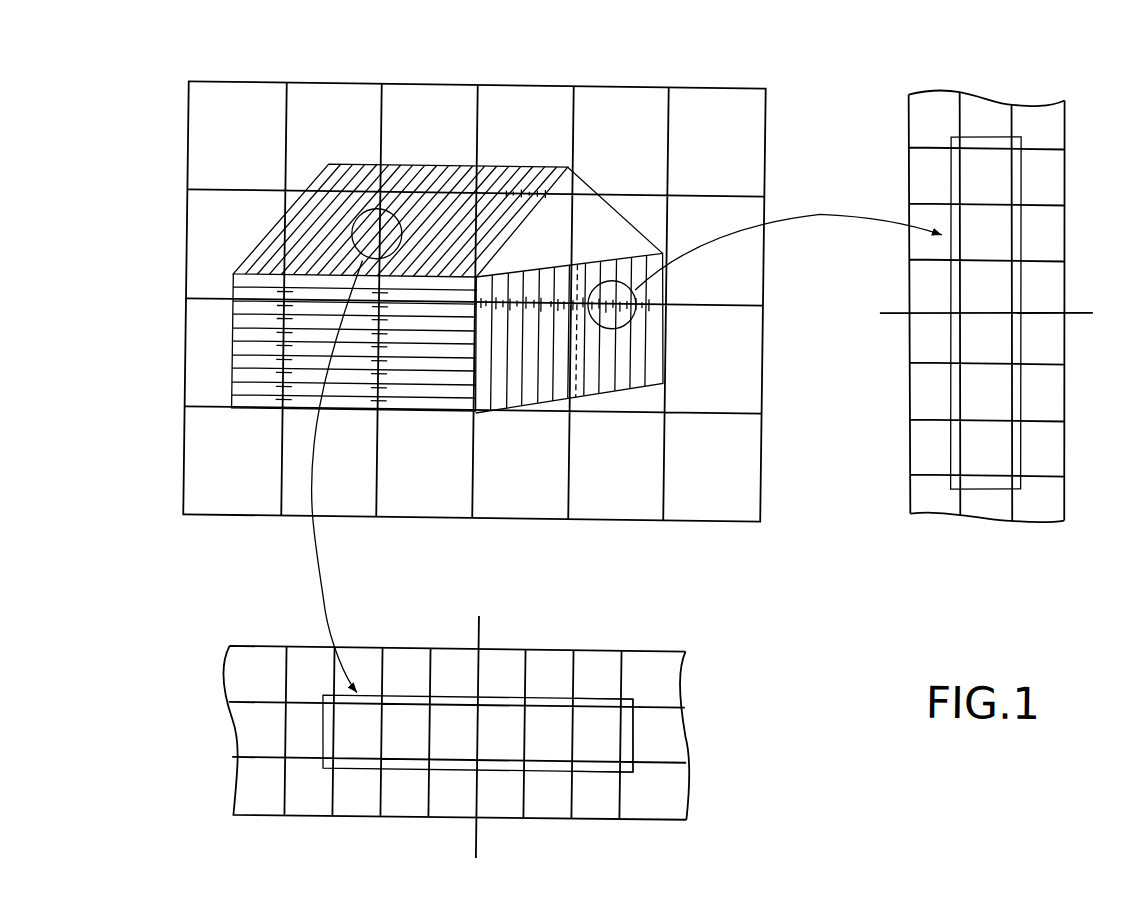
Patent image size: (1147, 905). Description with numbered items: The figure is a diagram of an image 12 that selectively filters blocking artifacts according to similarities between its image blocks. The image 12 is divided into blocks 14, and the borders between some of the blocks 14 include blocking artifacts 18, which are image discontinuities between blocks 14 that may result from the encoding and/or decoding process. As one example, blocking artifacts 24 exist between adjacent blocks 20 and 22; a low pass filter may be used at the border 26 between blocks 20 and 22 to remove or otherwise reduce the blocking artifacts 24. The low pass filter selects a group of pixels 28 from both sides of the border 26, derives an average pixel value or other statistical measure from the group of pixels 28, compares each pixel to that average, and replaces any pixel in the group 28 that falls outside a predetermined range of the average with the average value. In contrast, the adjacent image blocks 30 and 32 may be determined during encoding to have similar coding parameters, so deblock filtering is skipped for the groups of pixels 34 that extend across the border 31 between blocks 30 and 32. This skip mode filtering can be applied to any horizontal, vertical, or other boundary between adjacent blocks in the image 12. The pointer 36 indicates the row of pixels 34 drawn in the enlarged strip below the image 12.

The image 12 is at (172, 59).
The blocks 14 is at (438, 85).
The blocking artifacts 18 is at (519, 198).
The block 20 is at (647, 215).
The block 22 is at (650, 399).
The blocking artifacts 24 is at (819, 210).
The border 26 is at (653, 312).
The group of pixels 28 is at (1019, 130).
The adjacent image block 30 is at (289, 200).
The border 31 is at (370, 210).
The adjacent image block 32 is at (399, 205).
The groups of pixels 34 is at (632, 698).
The pixel row window pointer 36 is at (321, 572).